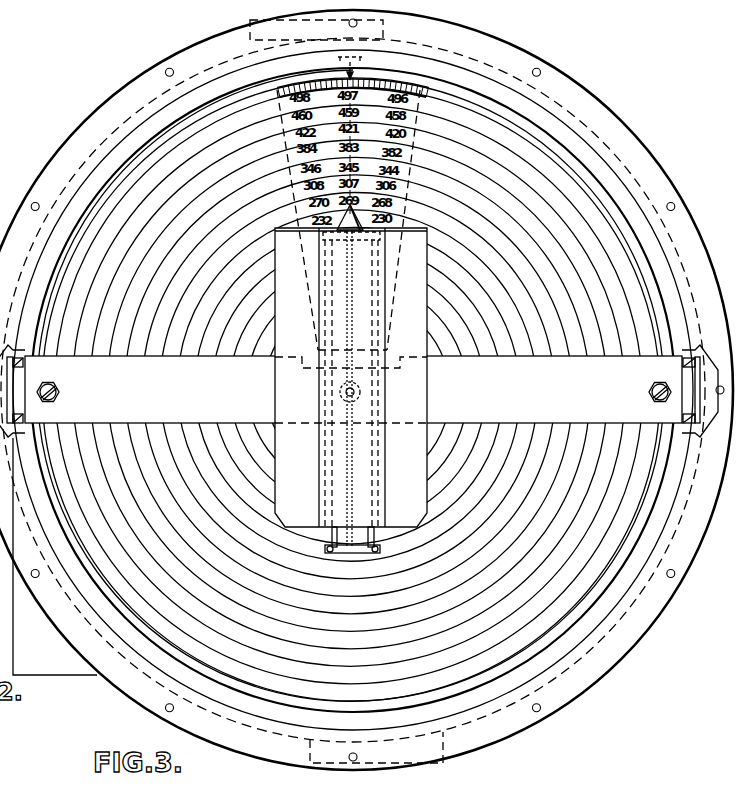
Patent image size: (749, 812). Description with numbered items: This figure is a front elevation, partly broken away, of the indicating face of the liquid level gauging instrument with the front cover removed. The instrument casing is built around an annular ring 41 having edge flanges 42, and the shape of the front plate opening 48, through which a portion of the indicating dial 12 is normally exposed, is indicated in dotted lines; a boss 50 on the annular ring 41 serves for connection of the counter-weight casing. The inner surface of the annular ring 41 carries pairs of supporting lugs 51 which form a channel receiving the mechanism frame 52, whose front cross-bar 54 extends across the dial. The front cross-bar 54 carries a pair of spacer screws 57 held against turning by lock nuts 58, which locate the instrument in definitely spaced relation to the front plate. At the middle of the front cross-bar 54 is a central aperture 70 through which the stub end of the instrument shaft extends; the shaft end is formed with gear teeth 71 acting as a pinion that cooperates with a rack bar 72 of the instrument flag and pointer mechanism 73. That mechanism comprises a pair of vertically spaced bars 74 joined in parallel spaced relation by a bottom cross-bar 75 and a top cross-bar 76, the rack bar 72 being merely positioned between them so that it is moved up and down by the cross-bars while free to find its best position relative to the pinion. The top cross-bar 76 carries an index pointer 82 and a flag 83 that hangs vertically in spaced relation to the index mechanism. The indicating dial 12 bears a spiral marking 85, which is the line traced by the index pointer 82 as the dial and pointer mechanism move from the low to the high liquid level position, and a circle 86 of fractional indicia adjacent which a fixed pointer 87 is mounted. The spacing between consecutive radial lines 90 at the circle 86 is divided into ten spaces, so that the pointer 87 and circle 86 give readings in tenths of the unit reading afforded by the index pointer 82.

The indicating dial 12 is at (147, 173).
The annular ring 41 is at (152, 110).
The edge flanges 42 is at (70, 160).
The opening 48 is at (278, 118).
The boss 50 is at (250, 24).
The supporting lugs 51 is at (692, 428).
The mechanism frame 52 is at (585, 381).
The front cross-bar 54 is at (490, 372).
The spacer screws 57 is at (60, 395).
The lock nuts 58 is at (53, 388).
The central aperture 70 is at (362, 395).
The gear teeth 71 is at (350, 400).
The rack bar 72 is at (348, 475).
The instrument flag and pointer mechanism 73 is at (402, 318).
The vertically spaced bars 74 is at (333, 448).
The bottom cross-bar 75 is at (357, 548).
The top cross-bar 76 is at (375, 238).
The index pointer 82 is at (367, 218).
The flag 83 is at (351, 308).
The spiral marking 85 is at (563, 190).
The circle of fractional indicia 86 is at (503, 118).
The pointer 87 is at (360, 90).
The radial lines 90 is at (392, 72).